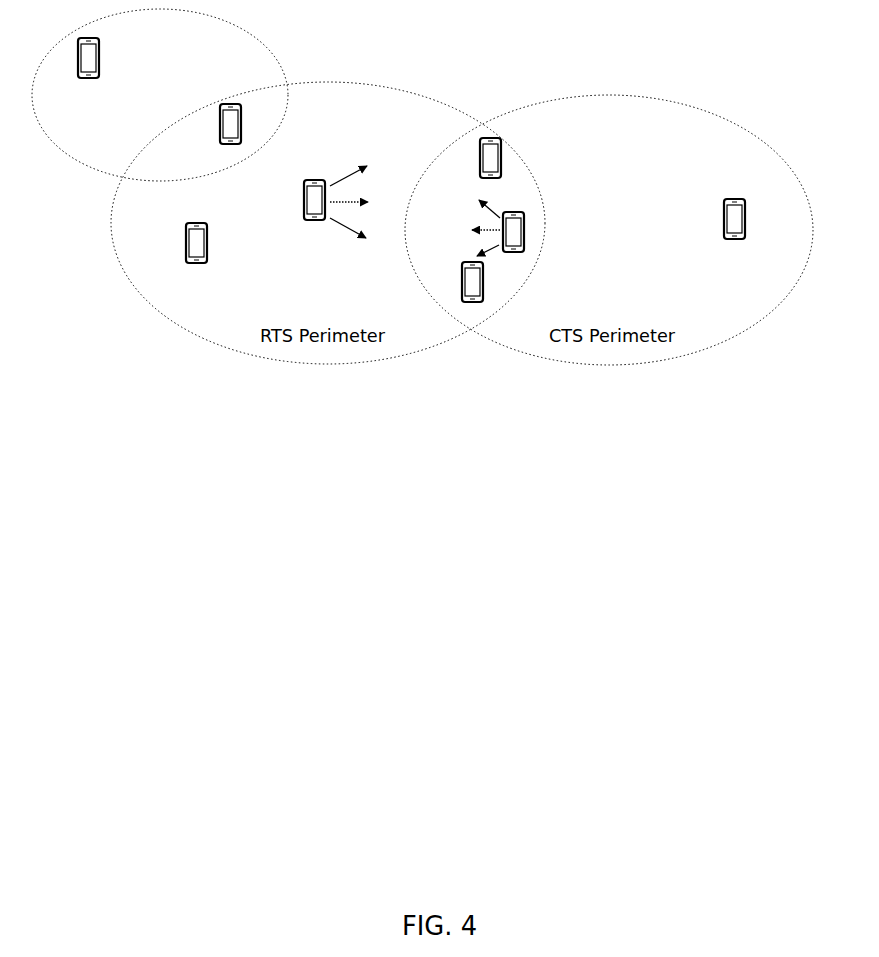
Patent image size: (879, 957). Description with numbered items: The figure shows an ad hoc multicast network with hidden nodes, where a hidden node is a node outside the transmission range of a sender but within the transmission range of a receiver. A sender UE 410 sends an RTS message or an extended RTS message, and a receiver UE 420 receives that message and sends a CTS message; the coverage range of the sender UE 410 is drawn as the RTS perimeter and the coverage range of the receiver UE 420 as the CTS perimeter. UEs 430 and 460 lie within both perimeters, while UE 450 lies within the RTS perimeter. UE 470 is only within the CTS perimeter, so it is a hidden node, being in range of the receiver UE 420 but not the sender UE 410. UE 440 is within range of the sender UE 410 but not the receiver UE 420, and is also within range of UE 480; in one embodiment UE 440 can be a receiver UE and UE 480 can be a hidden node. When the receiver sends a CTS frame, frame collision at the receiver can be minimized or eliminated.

The sender UE 410 is at (335, 204).
The receiver UE 420 is at (499, 238).
The UE 430 is at (490, 169).
The UE 440 is at (230, 135).
The UE 450 is at (197, 254).
The UE 460 is at (473, 293).
The UE 470 is at (735, 230).
The UE 480 is at (88, 69).